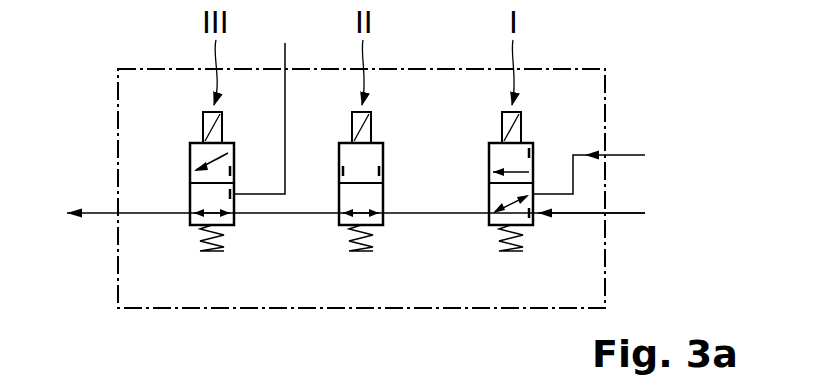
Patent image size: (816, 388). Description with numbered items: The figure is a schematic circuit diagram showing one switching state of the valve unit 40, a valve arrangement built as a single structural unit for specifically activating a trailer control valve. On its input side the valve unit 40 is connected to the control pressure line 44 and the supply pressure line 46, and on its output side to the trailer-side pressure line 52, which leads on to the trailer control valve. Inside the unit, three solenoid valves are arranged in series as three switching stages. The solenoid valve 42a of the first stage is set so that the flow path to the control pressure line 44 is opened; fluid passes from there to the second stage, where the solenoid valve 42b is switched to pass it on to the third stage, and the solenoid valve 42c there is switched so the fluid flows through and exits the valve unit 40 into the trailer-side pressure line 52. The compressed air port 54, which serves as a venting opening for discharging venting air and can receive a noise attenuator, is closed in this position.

The valve unit 40 is at (118, 92).
The solenoid valve of the first switching stage 42a is at (528, 108).
The solenoid valve of the second switching stage 42b is at (378, 108).
The solenoid valve of the third switching stage 42c is at (188, 106).
The control pressure line 44 is at (633, 153).
The supply pressure line 46 is at (633, 215).
The trailer-side pressure line 52 is at (96, 212).
The compressed air port 54 is at (287, 93).